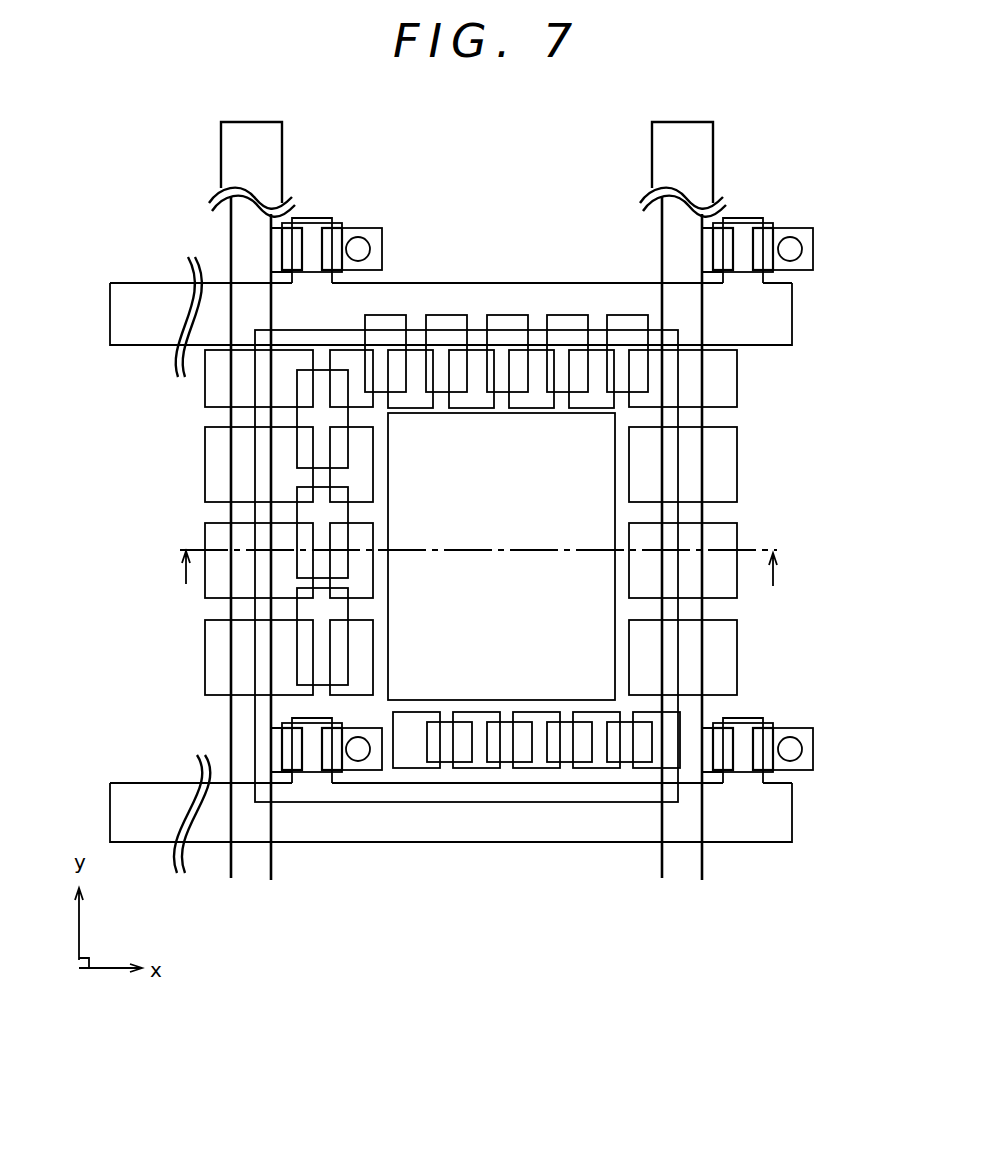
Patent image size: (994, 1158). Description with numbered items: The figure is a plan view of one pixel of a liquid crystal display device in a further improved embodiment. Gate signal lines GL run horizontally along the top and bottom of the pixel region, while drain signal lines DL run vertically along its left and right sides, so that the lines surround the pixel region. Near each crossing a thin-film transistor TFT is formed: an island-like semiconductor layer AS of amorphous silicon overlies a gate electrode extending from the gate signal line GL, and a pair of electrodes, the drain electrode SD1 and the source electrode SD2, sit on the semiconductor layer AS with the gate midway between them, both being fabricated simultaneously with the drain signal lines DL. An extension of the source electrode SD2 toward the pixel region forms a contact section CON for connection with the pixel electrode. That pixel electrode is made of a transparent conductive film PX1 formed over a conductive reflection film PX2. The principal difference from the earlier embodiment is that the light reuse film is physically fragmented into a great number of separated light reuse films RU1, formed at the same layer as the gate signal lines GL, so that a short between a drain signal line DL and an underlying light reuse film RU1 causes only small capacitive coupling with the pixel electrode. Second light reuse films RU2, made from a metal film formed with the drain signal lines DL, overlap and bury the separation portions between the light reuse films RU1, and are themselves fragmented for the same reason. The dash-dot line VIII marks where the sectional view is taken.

The drain signal line DL is at (272, 153).
The gate signal line GL is at (432, 283).
The transparent conductive film PX1 is at (580, 480).
The conductive reflection film PX2 is at (679, 340).
The light reuse film RU1 is at (650, 440).
The second light reuse film RU2 is at (507, 316).
The thin-film transistor TFT is at (313, 783).
The drain electrode SD1 is at (287, 750).
The source electrode SD2 is at (355, 765).
The semiconductor layer AS is at (310, 762).
The contact section CON is at (368, 757).
The section line VIII- VIII is at (178, 588).